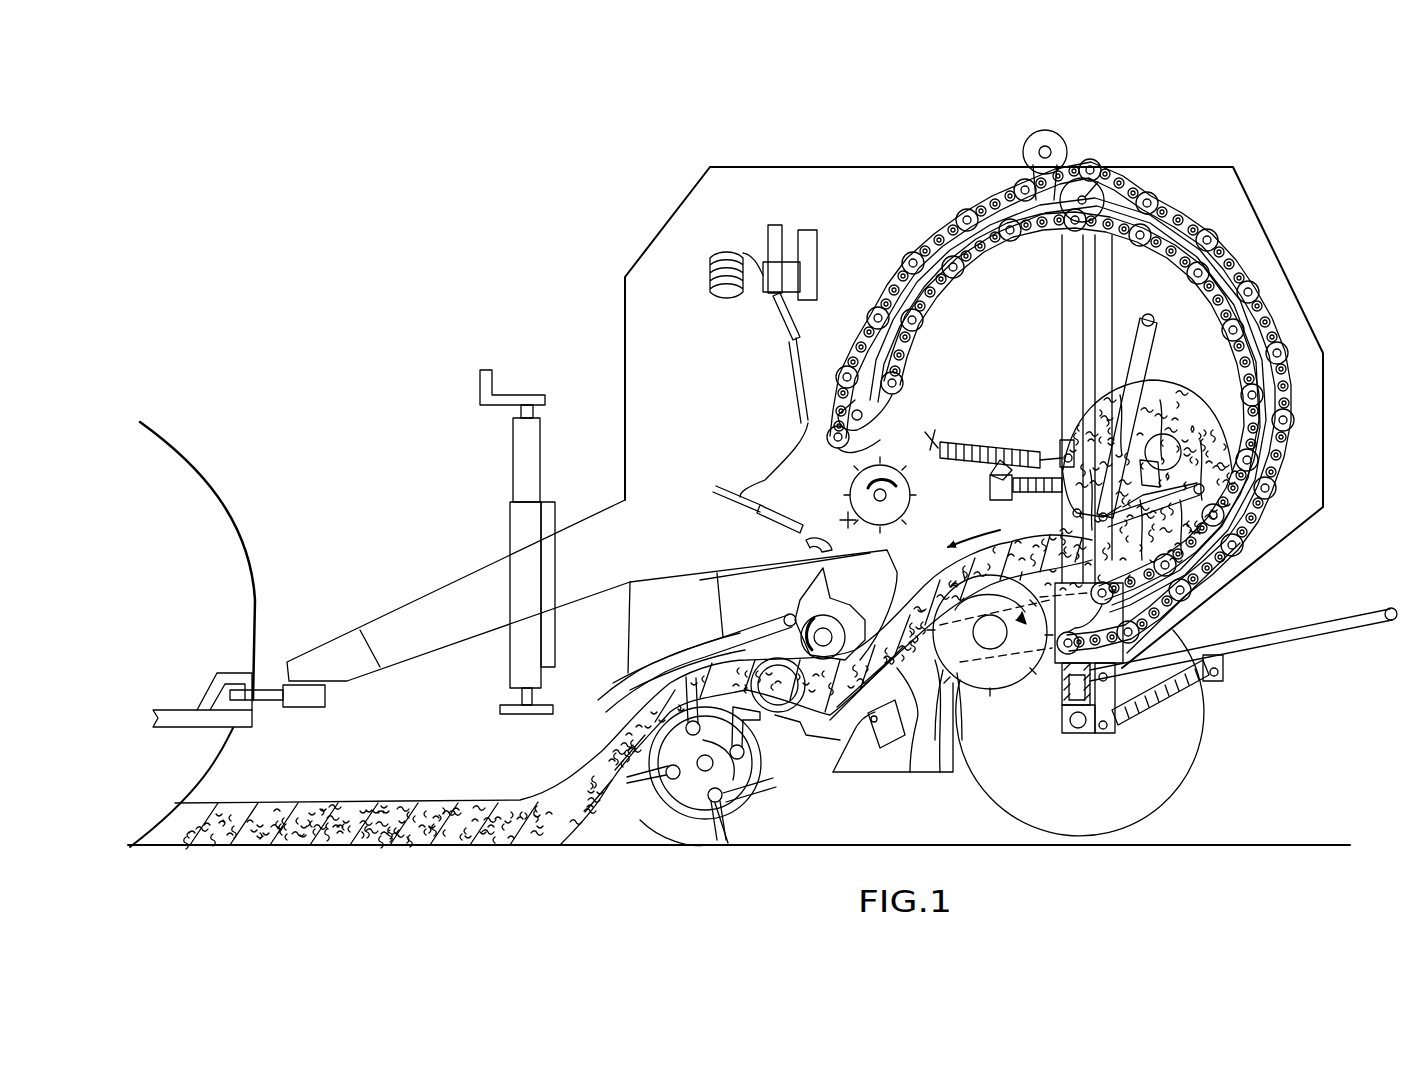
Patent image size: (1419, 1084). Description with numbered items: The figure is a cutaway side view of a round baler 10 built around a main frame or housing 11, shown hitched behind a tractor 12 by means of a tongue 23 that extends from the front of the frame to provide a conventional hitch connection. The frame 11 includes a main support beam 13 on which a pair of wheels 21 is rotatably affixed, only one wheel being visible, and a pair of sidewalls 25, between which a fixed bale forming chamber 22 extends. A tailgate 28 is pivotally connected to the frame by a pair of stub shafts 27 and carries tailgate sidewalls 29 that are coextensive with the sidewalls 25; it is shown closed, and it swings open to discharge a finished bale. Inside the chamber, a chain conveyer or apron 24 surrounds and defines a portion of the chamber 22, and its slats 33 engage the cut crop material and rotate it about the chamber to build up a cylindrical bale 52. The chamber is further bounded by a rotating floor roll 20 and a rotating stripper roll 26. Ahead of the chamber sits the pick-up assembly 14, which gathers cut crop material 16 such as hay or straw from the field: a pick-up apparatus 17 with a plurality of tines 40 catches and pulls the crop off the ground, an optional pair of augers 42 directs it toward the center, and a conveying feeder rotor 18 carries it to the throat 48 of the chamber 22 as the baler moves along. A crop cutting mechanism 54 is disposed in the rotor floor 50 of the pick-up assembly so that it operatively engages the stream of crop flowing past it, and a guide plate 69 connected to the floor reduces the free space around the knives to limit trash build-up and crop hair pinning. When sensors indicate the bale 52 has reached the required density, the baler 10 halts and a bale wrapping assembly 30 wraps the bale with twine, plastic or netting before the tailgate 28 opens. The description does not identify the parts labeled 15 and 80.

The baler 10 is at (560, 260).
The main frame 11 is at (797, 160).
The tractor 12 is at (173, 410).
The main support beam 13 is at (1060, 697).
The pick-up assembly 14 is at (672, 828).
The pickup reel 15 is at (645, 820).
The cut crop material 16 is at (360, 800).
The pick-up apparatus 17 is at (725, 770).
The conveying feeder rotor 18 is at (815, 612).
The rotating floor roll 20 is at (935, 665).
The wheels 21 is at (1203, 762).
The bale forming chamber 22 is at (1014, 331).
The tongue 23 is at (435, 633).
The chain conveyer 24 is at (1205, 300).
The sidewalls 25 is at (888, 206).
The rotating stripper roll 26 is at (915, 498).
The stub shafts 27 is at (1095, 185).
The tailgate 28 is at (1262, 553).
The tailgate sidewalls 29 is at (1229, 206).
The bale wrapping assembly 30 is at (782, 420).
The slats 33 is at (1258, 282).
The tines 40 is at (728, 843).
The augers 42 is at (735, 650).
The throat 48 is at (992, 524).
The rotor floor 50 is at (793, 730).
The bale 52 is at (1232, 440).
The crop cutting mechanism 54 is at (853, 745).
The guide plate 69 is at (900, 700).
The rotor guard 80 is at (732, 607).